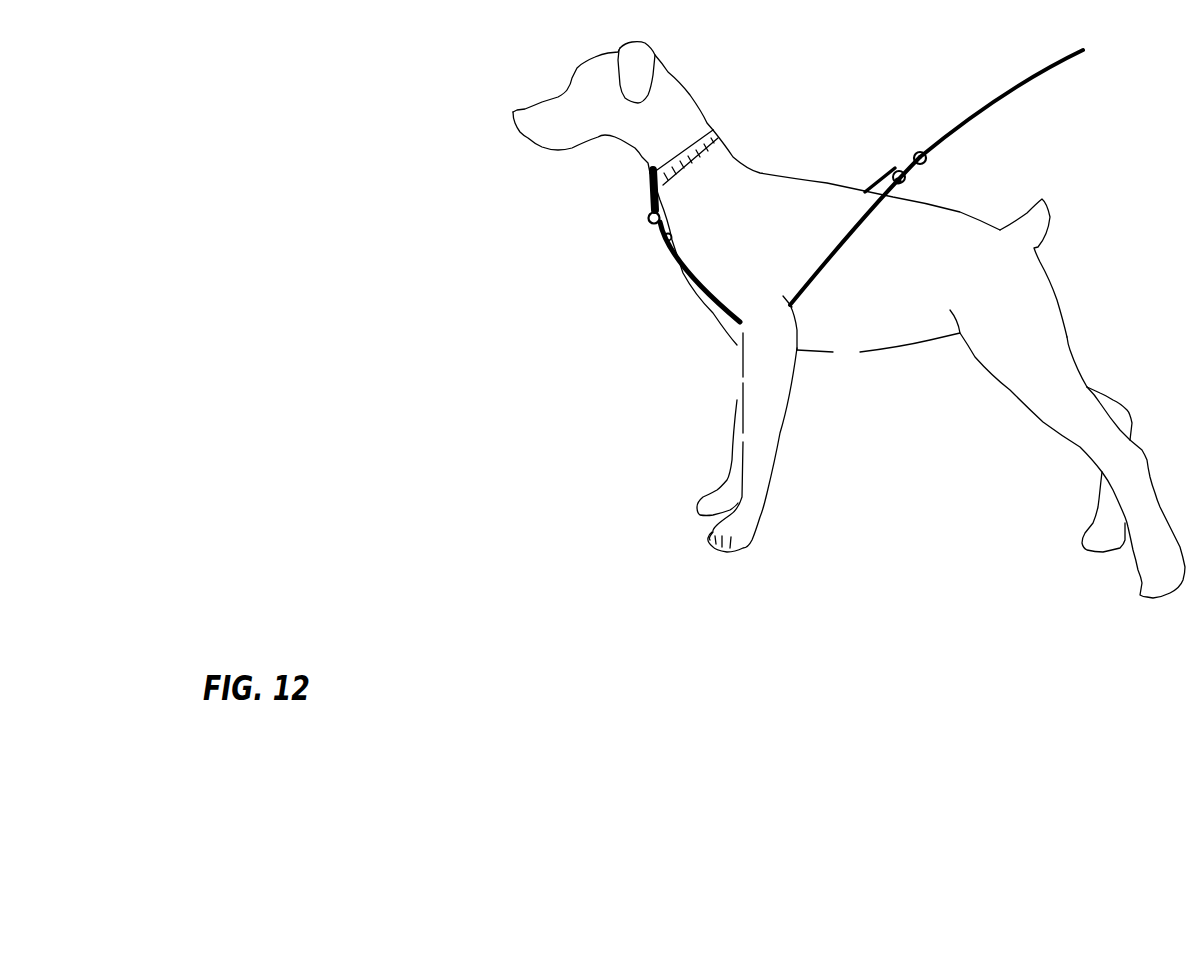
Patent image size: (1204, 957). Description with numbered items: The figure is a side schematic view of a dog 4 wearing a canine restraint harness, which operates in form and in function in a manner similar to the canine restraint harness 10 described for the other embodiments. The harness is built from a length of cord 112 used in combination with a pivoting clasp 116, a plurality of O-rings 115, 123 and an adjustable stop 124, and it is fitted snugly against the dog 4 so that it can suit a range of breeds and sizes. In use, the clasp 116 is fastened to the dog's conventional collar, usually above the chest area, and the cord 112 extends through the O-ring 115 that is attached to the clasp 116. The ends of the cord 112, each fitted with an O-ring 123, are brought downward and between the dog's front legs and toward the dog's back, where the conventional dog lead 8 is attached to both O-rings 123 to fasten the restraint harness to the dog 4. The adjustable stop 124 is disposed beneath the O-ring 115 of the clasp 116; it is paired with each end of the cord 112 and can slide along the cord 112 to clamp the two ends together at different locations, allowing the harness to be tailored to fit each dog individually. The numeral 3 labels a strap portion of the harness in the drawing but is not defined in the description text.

The dog 4 is at (481, 41).
The canine restraint harness 10 is at (841, 97).
The shoulder strap 3 is at (715, 131).
The dog lead 8 is at (1038, 92).
The cord 112 is at (859, 240).
The O-ring 115 is at (642, 227).
The clasp 116 is at (645, 205).
The O-ring 123 is at (885, 170).
The adjustable stop 124 is at (624, 281).